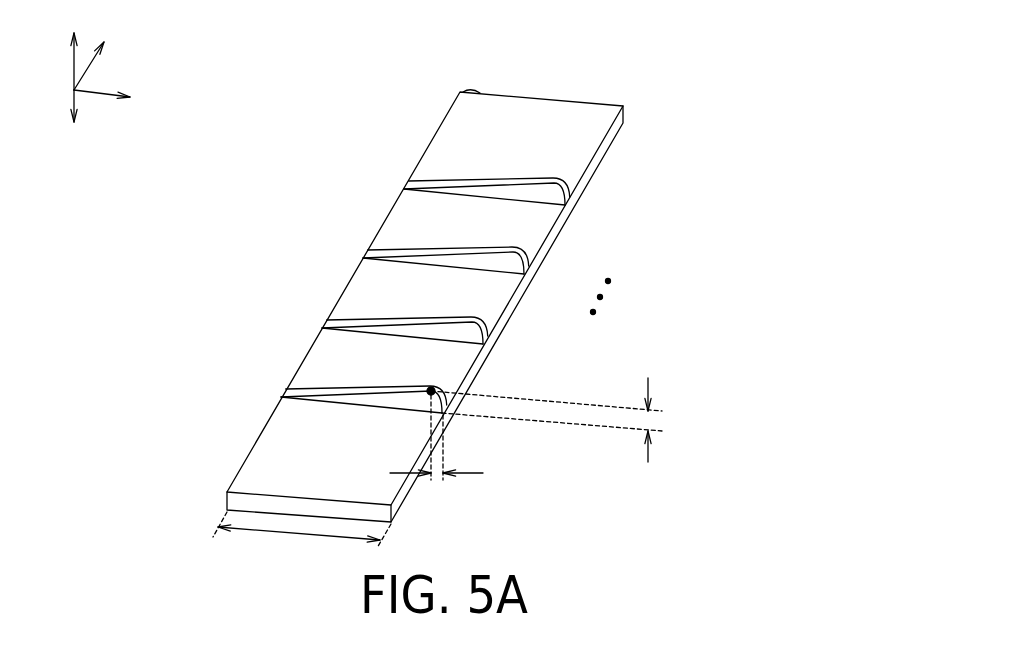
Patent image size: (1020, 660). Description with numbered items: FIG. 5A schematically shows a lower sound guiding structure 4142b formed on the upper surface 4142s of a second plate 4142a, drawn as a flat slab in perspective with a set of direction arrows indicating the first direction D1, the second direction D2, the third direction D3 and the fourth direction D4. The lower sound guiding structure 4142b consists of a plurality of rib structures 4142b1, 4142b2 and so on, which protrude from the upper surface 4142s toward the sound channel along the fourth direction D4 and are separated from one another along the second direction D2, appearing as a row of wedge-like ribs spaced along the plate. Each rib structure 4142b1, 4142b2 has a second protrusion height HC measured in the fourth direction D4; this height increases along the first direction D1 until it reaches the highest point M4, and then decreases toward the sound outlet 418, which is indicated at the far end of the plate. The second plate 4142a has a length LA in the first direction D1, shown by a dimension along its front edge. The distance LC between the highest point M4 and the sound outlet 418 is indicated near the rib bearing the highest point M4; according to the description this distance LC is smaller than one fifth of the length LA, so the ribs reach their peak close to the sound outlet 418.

The sound outlet 418 is at (628, 104).
The second plate 4142a is at (396, 502).
The upper surface 4142s is at (310, 460).
The lower sound guiding structure 4142b is at (712, 233).
The rib structure 4142b1 is at (481, 392).
The rib structure 4142b2 is at (502, 333).
The highest point M4 is at (431, 391).
The distance LC is at (442, 464).
The second protrusion height HC is at (651, 421).
The length LA is at (302, 536).
The first direction D1 is at (118, 97).
The second direction D2 is at (102, 50).
The third direction D3 is at (74, 121).
The fourth direction D4 is at (74, 45).